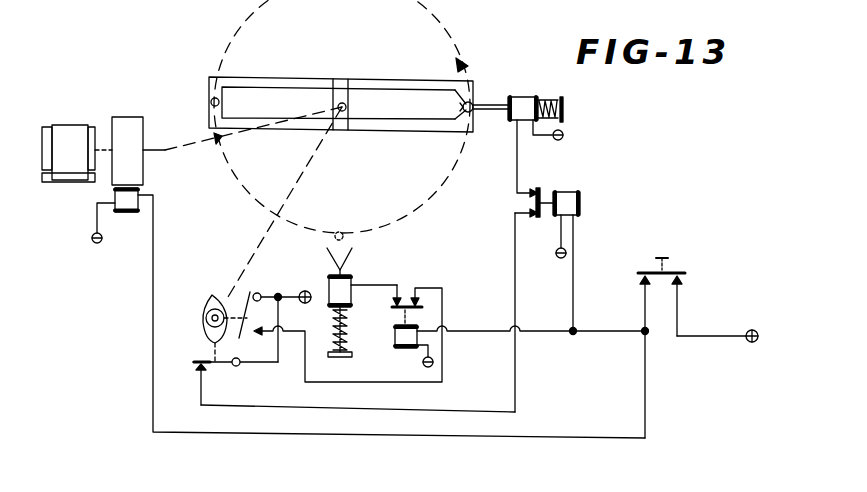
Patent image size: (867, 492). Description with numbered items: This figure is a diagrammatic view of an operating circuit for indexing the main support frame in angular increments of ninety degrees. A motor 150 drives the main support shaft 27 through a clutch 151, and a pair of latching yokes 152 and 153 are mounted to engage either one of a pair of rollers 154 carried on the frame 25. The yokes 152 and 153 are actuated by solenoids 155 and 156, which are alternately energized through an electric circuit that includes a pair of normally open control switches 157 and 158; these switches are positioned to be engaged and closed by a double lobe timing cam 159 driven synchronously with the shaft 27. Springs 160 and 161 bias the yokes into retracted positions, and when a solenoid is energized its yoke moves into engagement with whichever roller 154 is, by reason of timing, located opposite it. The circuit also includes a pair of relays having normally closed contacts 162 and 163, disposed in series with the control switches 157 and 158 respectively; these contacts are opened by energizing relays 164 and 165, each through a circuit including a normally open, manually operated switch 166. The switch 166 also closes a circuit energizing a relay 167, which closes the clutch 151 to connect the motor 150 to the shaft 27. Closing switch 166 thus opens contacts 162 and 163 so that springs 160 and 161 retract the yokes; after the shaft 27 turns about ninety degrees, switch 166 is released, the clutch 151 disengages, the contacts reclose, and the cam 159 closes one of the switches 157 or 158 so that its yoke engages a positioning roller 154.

The frame 25 is at (290, 80).
The main support shaft 27 is at (345, 103).
The motor 150 is at (60, 128).
The clutch 151 is at (128, 120).
The latching yoke 152 is at (352, 262).
The latching yoke 153 is at (462, 93).
The rollers 154 is at (211, 103).
The solenoid 155 is at (329, 286).
The solenoid 156 is at (517, 101).
The control switch 157 is at (232, 366).
The control switch 158 is at (244, 302).
The double lobe timing cam 159 is at (205, 330).
The spring 160 is at (347, 320).
The spring 161 is at (546, 100).
The normally closed relay contacts 162 is at (530, 201).
The normally closed relay contacts 163 is at (402, 300).
The relay 164 is at (566, 196).
The relay 165 is at (400, 338).
The manually operated switch 166 is at (680, 272).
The relay 167 is at (130, 212).